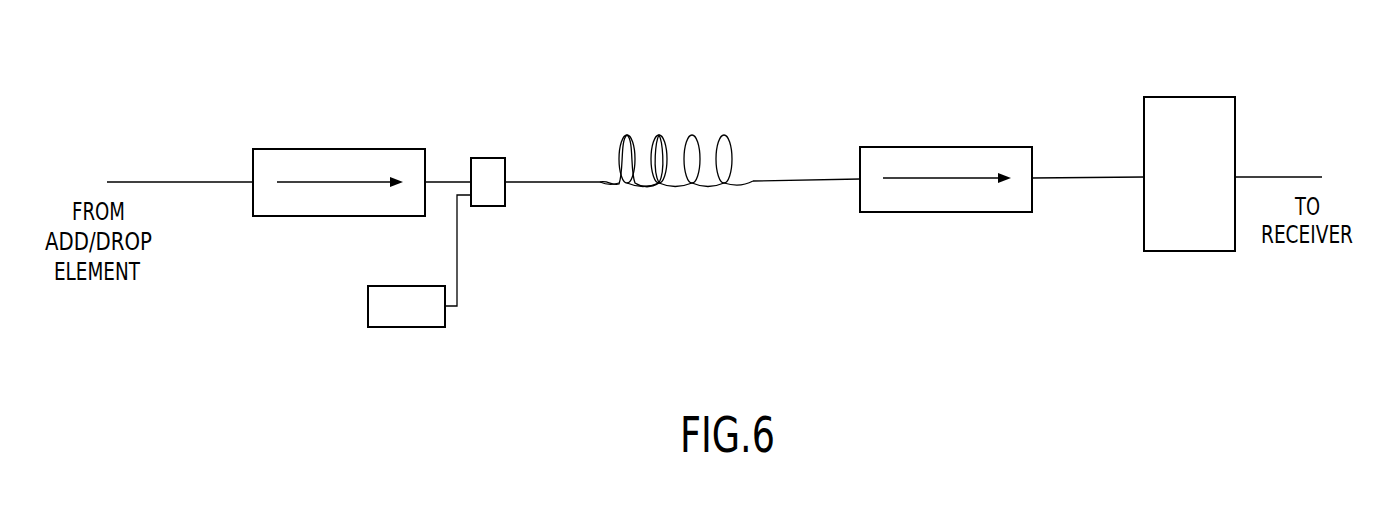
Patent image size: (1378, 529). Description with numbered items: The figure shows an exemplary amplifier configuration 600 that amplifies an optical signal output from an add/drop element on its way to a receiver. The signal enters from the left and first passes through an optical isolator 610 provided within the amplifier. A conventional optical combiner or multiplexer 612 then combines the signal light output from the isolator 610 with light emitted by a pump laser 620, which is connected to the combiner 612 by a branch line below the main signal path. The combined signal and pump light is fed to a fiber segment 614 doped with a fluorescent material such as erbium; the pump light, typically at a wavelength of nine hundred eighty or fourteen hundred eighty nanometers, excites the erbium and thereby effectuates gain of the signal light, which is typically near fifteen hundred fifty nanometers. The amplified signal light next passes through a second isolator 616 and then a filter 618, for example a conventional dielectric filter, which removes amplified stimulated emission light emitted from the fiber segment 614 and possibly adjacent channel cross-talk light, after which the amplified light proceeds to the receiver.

The amplifier configuration 600 is at (849, 291).
The isolator 610 is at (353, 149).
The coupler 612 is at (493, 158).
The fiber segment 614 is at (660, 127).
The second isolator 616 is at (938, 147).
The filter 618 is at (1188, 97).
The pump laser 620 is at (413, 327).